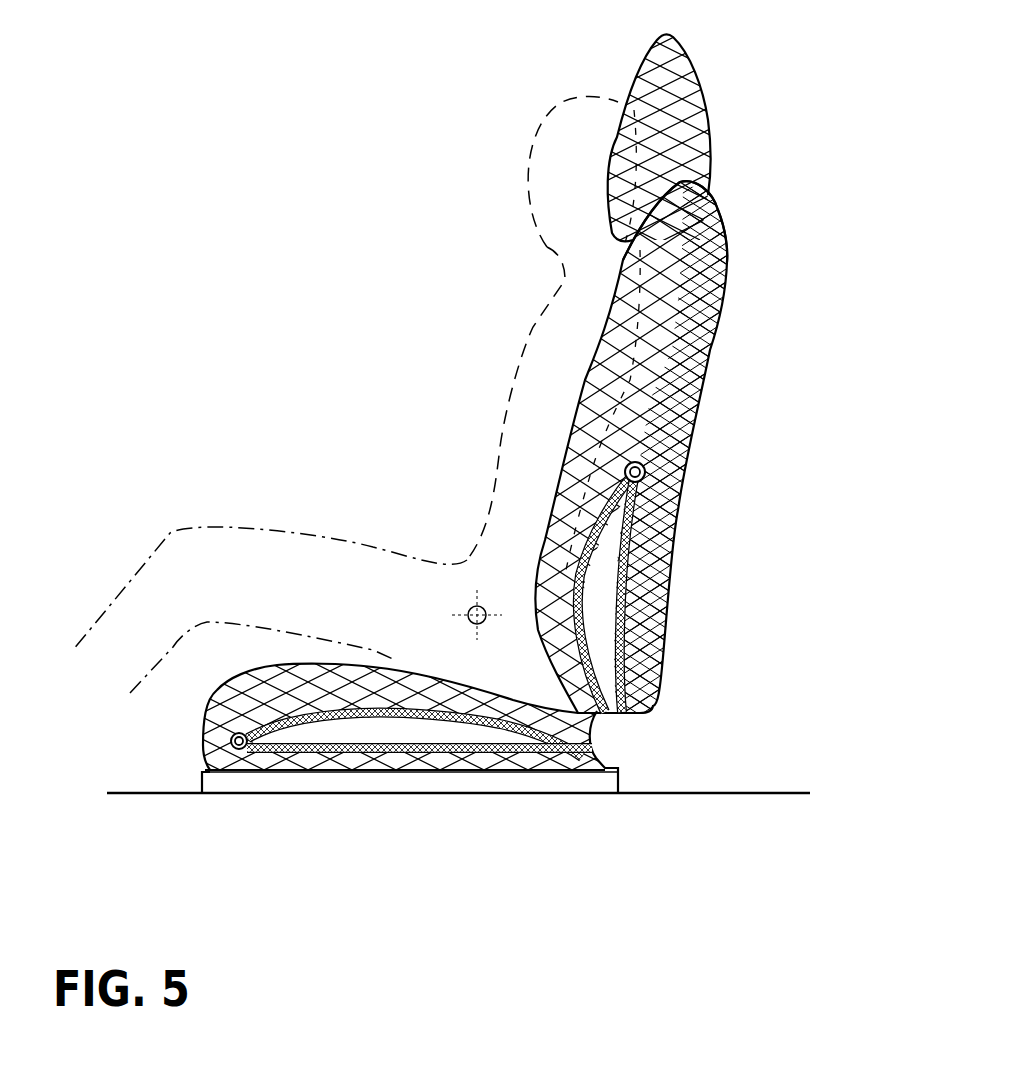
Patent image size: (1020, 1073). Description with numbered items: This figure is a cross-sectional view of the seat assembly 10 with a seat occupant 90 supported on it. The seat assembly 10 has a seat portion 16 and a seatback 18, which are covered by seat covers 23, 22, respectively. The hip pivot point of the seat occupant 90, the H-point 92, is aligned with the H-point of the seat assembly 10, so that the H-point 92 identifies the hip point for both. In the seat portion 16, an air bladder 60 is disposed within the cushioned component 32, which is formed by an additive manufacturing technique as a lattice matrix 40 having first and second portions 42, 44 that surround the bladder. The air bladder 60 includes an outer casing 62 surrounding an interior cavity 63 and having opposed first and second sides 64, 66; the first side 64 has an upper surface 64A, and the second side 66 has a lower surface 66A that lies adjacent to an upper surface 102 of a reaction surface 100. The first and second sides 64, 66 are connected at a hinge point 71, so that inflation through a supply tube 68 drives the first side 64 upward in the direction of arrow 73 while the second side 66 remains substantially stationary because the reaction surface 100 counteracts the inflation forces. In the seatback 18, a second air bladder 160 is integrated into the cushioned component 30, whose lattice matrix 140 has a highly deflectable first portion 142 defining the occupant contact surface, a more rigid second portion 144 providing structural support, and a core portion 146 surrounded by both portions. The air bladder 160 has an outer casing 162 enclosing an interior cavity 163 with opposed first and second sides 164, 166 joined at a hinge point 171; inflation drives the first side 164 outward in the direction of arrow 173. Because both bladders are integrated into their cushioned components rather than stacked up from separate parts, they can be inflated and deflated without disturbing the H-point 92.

The seat assembly 10 is at (753, 120).
The seat portion 16 is at (180, 753).
The seatback 18 is at (733, 408).
The seat cover 22 is at (600, 375).
The seat cover 23 is at (324, 668).
The cushioned component 30 is at (727, 306).
The cushioned component 32 is at (206, 693).
The lattice matrix 40 is at (236, 680).
The first portion 42 is at (270, 668).
The second portion 44 is at (260, 770).
The air bladder 60 is at (500, 768).
The outer casing 62 is at (360, 711).
The interior cavity 63 is at (413, 731).
The first side 64 is at (398, 708).
The upper surface 64A is at (433, 711).
The second side 66 is at (527, 762).
The lower surface 66A is at (548, 764).
The supply tube 68 is at (605, 757).
The hinge point 71 is at (203, 773).
The arrow 73 is at (473, 730).
The seat occupant 90 is at (517, 130).
The H-point 92 is at (477, 606).
The reaction surface 100 is at (403, 782).
The upper surface 102 is at (342, 772).
The lattice matrix 140 is at (727, 207).
The first portion 142 is at (568, 285).
The second portion 144 is at (730, 240).
The core portion 146 is at (648, 452).
The air bladder 160 is at (643, 540).
The outer casing 162 is at (594, 580).
The interior cavity 163 is at (665, 665).
The first side 164 is at (567, 487).
The second side 166 is at (663, 633).
The hinge point 171 is at (646, 472).
The arrow 173 is at (617, 597).